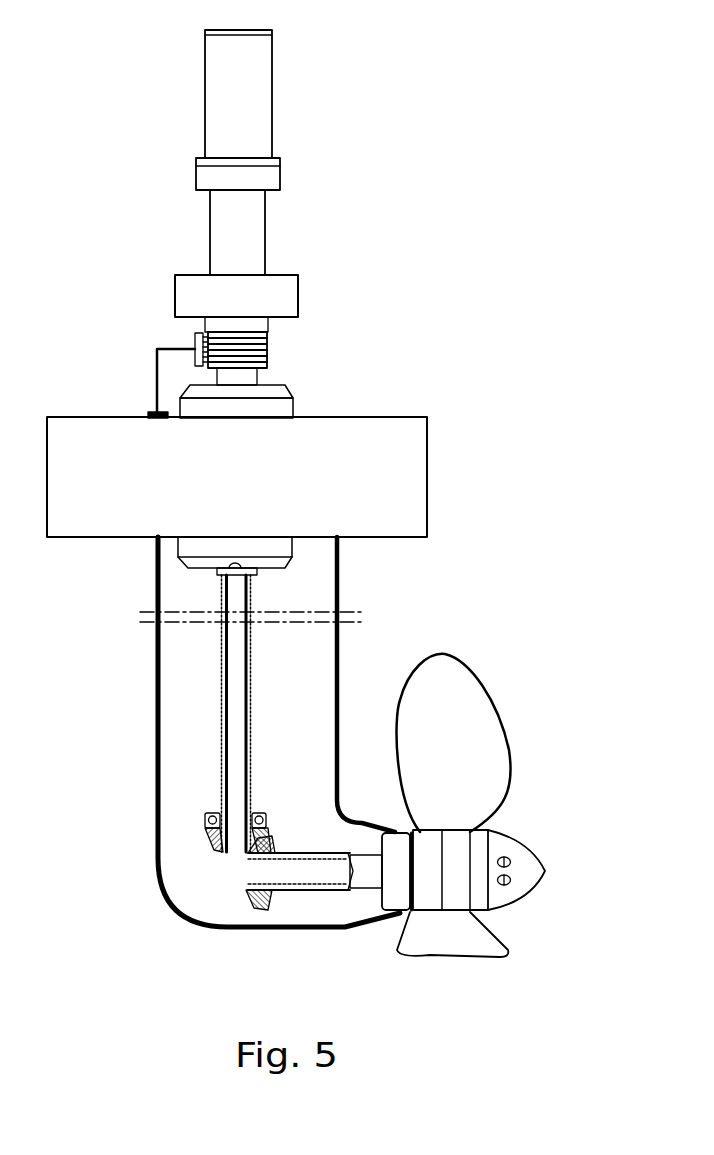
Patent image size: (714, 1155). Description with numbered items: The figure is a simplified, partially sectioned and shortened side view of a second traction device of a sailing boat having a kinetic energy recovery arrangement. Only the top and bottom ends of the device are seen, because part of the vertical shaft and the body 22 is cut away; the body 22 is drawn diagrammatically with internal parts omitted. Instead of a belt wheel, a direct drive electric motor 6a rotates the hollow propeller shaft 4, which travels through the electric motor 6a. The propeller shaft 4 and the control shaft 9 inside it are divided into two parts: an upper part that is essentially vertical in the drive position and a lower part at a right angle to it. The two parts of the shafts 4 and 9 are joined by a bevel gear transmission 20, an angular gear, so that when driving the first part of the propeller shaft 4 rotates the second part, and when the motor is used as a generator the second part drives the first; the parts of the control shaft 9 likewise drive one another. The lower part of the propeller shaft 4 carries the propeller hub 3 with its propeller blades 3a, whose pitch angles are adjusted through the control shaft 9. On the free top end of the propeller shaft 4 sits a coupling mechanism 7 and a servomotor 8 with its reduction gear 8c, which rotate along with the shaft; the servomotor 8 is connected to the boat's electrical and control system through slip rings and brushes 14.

The servomotor 8 is at (215, 86).
The reduction gear 8c is at (215, 237).
The coupling mechanism 7 is at (337, 295).
The brushes 14 is at (155, 375).
The propeller shaft 4 is at (252, 380).
The electric motor 6a is at (405, 465).
The body 22 is at (157, 678).
The control shaft 9 is at (232, 764).
The bevel gear transmission 20 is at (289, 841).
The propeller hub 3 is at (545, 823).
The propeller blades 3a is at (465, 675).